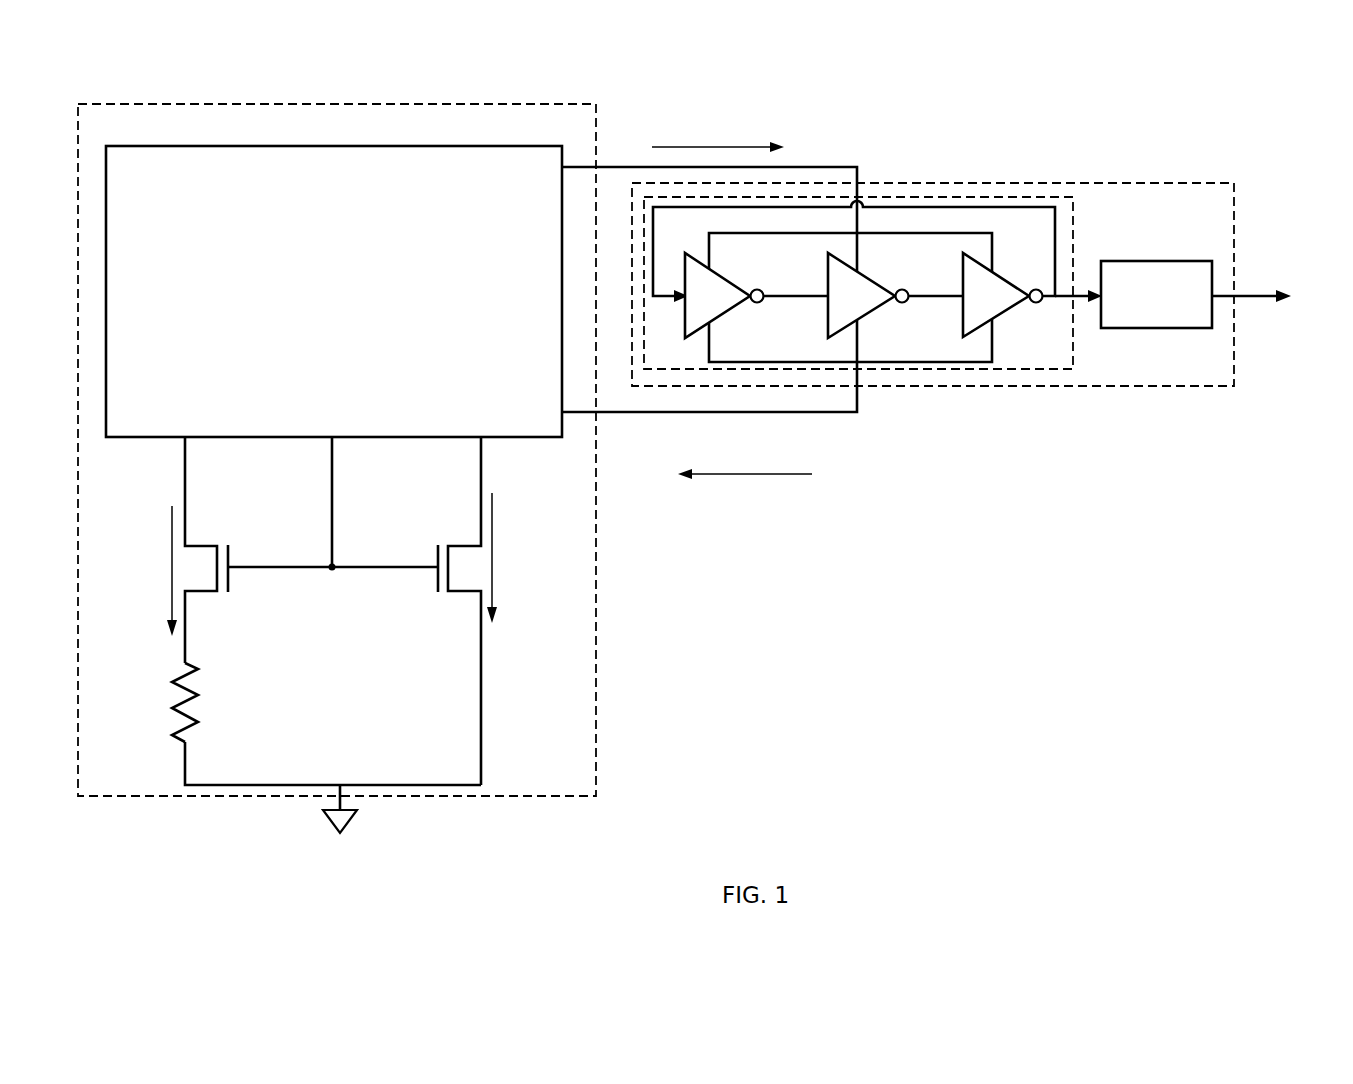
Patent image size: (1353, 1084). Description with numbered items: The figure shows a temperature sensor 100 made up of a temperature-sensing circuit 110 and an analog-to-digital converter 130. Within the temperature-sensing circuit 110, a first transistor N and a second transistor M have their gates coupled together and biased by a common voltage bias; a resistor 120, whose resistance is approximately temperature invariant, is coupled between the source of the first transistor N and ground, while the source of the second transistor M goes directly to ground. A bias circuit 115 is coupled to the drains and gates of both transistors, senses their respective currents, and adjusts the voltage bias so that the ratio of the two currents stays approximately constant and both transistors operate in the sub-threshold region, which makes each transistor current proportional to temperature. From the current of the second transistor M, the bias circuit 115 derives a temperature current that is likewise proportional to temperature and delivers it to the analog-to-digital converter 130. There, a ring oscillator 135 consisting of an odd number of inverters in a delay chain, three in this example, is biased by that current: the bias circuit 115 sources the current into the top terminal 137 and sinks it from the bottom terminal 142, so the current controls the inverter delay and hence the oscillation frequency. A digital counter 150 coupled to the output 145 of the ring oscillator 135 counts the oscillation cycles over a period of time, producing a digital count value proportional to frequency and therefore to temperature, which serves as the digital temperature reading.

The temperature sensor 100 is at (1302, 121).
The temperature-sensing circuit 110 is at (597, 112).
The bias circuit 115 is at (345, 146).
The resistor 120 is at (156, 674).
The analog-to-digital converter (ADC) 130 is at (1121, 180).
The ring oscillator 135 is at (1075, 228).
The top terminal 137 is at (858, 234).
The bottom terminal 142 is at (858, 362).
The output 145 is at (1050, 290).
The digital counter 150 is at (1168, 260).